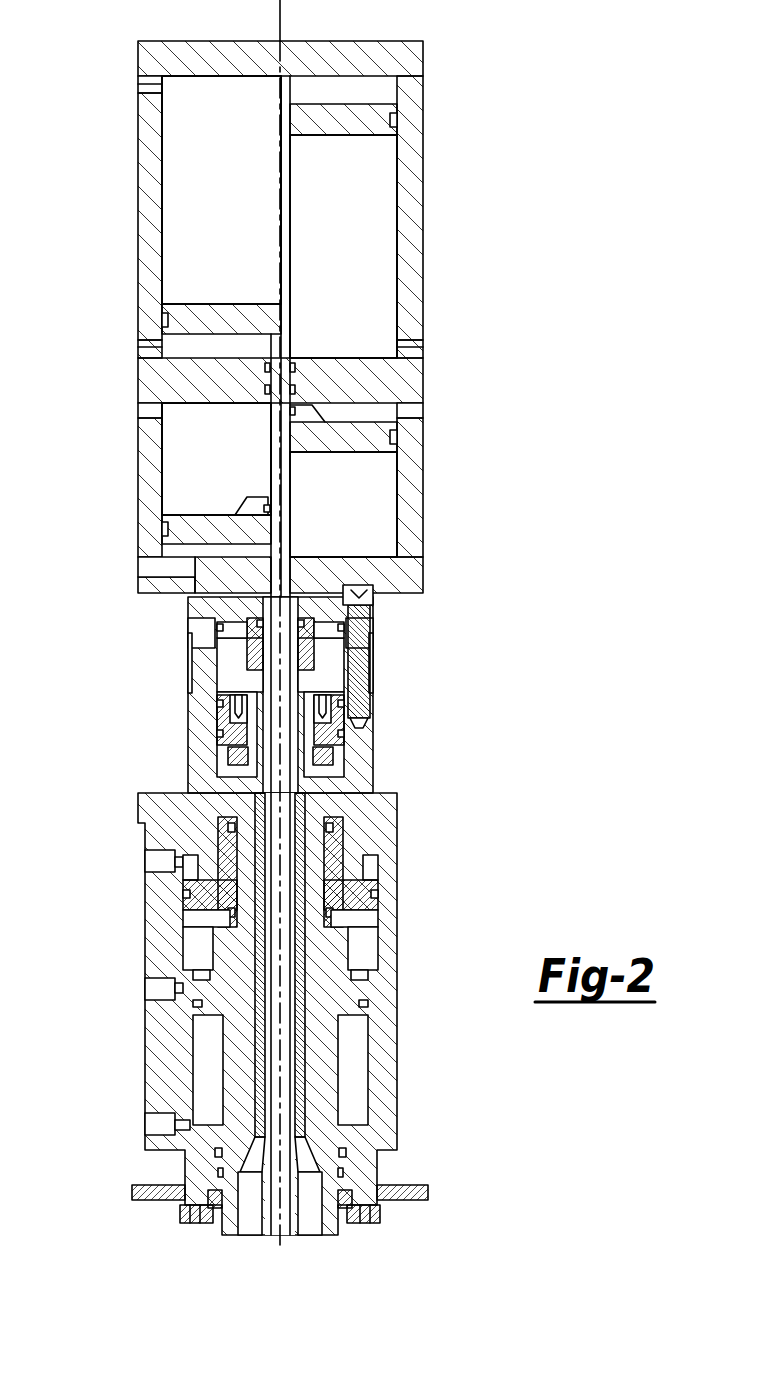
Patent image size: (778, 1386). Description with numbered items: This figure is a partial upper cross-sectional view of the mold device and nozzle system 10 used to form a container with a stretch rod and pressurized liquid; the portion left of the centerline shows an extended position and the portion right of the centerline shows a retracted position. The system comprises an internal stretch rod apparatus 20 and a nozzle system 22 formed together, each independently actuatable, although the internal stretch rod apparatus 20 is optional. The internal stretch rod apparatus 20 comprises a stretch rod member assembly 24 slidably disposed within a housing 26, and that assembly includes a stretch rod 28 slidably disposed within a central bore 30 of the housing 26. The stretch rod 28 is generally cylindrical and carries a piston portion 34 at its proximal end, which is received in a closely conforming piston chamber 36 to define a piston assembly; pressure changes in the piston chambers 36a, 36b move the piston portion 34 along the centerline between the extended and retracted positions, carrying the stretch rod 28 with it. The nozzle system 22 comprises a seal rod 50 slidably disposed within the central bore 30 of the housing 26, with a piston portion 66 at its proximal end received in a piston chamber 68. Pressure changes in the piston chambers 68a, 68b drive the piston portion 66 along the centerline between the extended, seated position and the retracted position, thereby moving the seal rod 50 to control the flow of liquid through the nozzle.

The mold device and nozzle system 10 is at (474, 875).
The internal stretch rod apparatus 20 is at (472, 262).
The nozzle system 22 is at (70, 497).
The stretch rod member assembly 24 is at (303, 961).
The housing 26 is at (400, 1075).
The stretch rod 28 is at (280, 1070).
The central bore 30 is at (306, 813).
The piston portion 34 is at (357, 127).
The piston chamber 36 is at (183, 122).
The piston chamber 36a is at (229, 205).
The piston chamber 36b is at (362, 263).
The seal rod 50 is at (268, 782).
The piston portion 66 is at (375, 438).
The piston chamber 68 is at (172, 460).
The piston chamber 68a is at (229, 475).
The piston chamber 68b is at (362, 523).